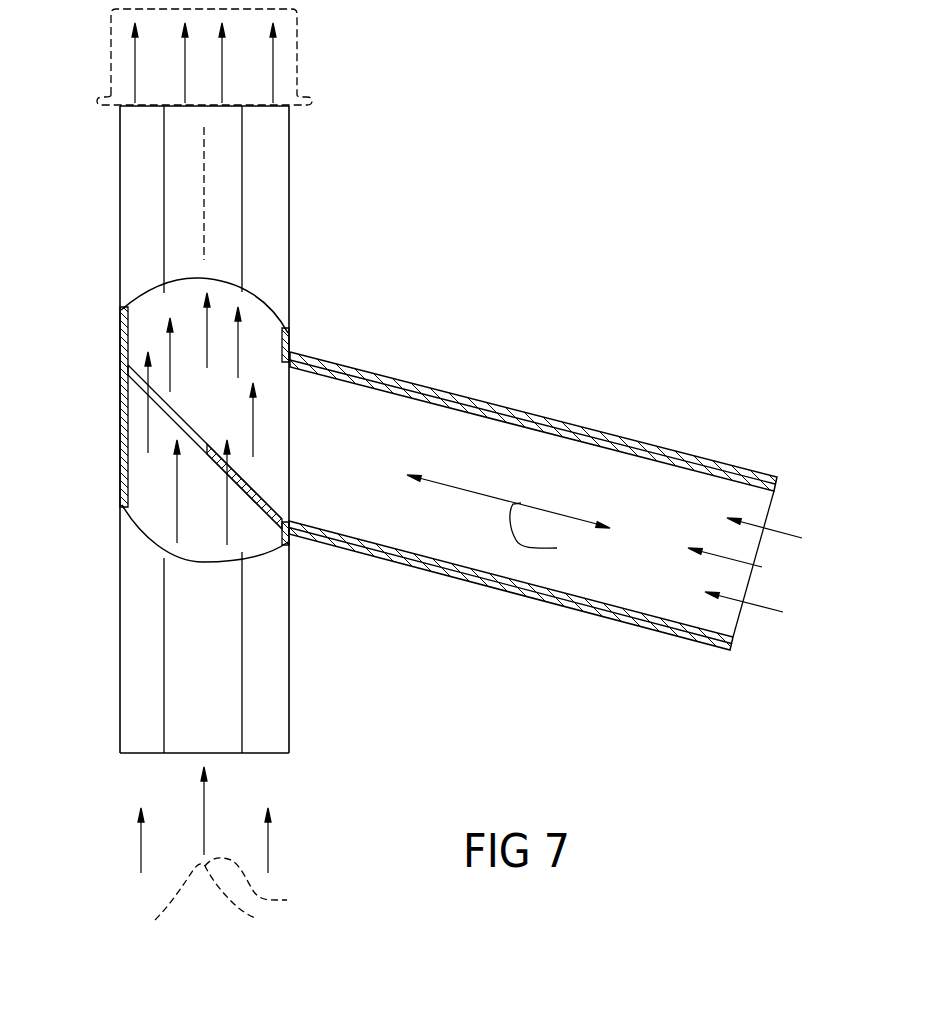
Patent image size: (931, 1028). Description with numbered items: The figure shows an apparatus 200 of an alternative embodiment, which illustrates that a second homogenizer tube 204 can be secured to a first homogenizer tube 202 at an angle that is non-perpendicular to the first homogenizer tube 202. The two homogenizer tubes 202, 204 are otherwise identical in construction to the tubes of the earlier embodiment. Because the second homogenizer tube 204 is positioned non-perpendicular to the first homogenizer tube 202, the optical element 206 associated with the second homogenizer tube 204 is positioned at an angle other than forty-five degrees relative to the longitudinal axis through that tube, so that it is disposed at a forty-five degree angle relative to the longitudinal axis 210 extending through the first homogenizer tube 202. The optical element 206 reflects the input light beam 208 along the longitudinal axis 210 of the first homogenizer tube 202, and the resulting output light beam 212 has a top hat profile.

The apparatus 200 is at (788, 530).
The first homogenizer tube 202 is at (106, 475).
The second homogenizer tube 204 is at (514, 394).
The optical element 206 is at (129, 367).
The input light beam 208 is at (231, 843).
The longitudinal axis 210 is at (204, 195).
The output light beam 212 is at (297, 50).